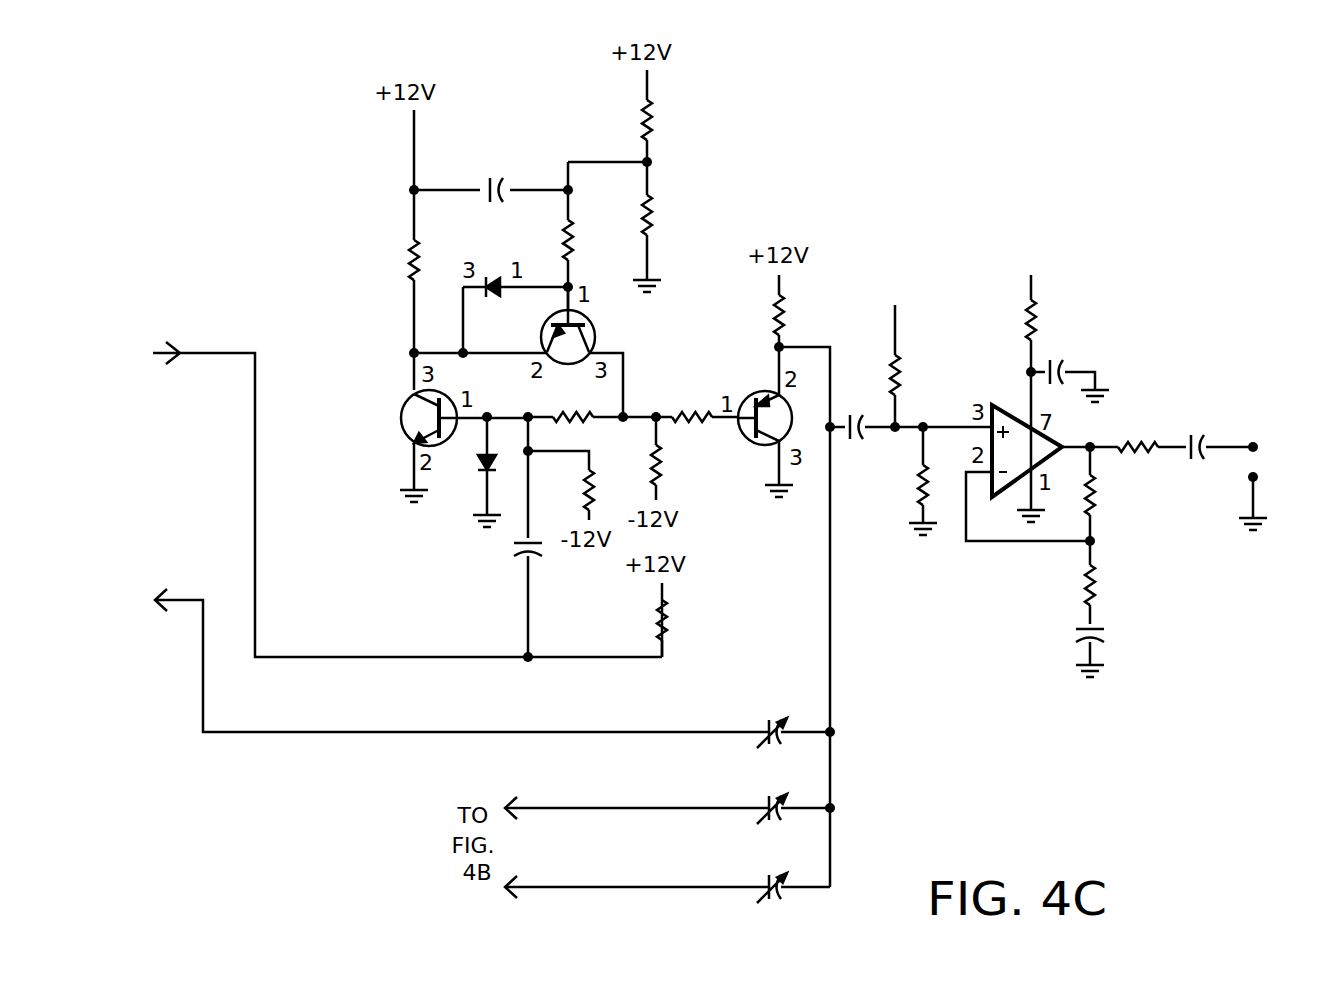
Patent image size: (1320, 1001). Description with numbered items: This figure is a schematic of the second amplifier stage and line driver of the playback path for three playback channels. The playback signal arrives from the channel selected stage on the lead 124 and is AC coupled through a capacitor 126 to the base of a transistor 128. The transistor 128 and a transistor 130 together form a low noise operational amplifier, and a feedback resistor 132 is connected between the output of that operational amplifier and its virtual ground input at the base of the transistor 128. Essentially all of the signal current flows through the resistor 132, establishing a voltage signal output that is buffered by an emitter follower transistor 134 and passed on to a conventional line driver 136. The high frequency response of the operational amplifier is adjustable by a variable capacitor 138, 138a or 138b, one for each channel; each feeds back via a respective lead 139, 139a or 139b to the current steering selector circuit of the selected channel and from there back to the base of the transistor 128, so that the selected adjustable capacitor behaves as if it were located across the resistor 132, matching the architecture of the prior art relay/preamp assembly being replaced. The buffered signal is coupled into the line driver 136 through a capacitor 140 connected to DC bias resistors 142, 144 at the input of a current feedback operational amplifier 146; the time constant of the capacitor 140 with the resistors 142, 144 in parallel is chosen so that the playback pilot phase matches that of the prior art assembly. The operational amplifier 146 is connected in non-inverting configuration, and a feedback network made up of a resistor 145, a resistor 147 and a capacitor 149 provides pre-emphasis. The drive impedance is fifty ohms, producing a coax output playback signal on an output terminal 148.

The lead 124 is at (187, 354).
The capacitor 126 is at (510, 547).
The transistor 128 is at (405, 405).
The transistor 130 is at (597, 328).
The feedback resistor 132 is at (578, 422).
The emitter follower transistor 134 is at (762, 393).
The line driver 136 is at (951, 548).
The variable capacitor 138 is at (772, 721).
The variable capacitor 138a is at (773, 797).
The variable capacitor 138b is at (773, 876).
The lead 139 is at (203, 697).
The lead 139a is at (525, 808).
The lead 139b is at (528, 890).
The capacitor 140 is at (853, 442).
The DC bias resistor 142 is at (900, 366).
The DC bias resistor 144 is at (918, 487).
The feedback network resistor 145 is at (1097, 497).
The current feedback operational amplifier 146 is at (1004, 403).
The feedback network resistor 147 is at (1096, 585).
The output terminal 148 is at (1220, 443).
The feedback network capacitor 149 is at (1097, 628).